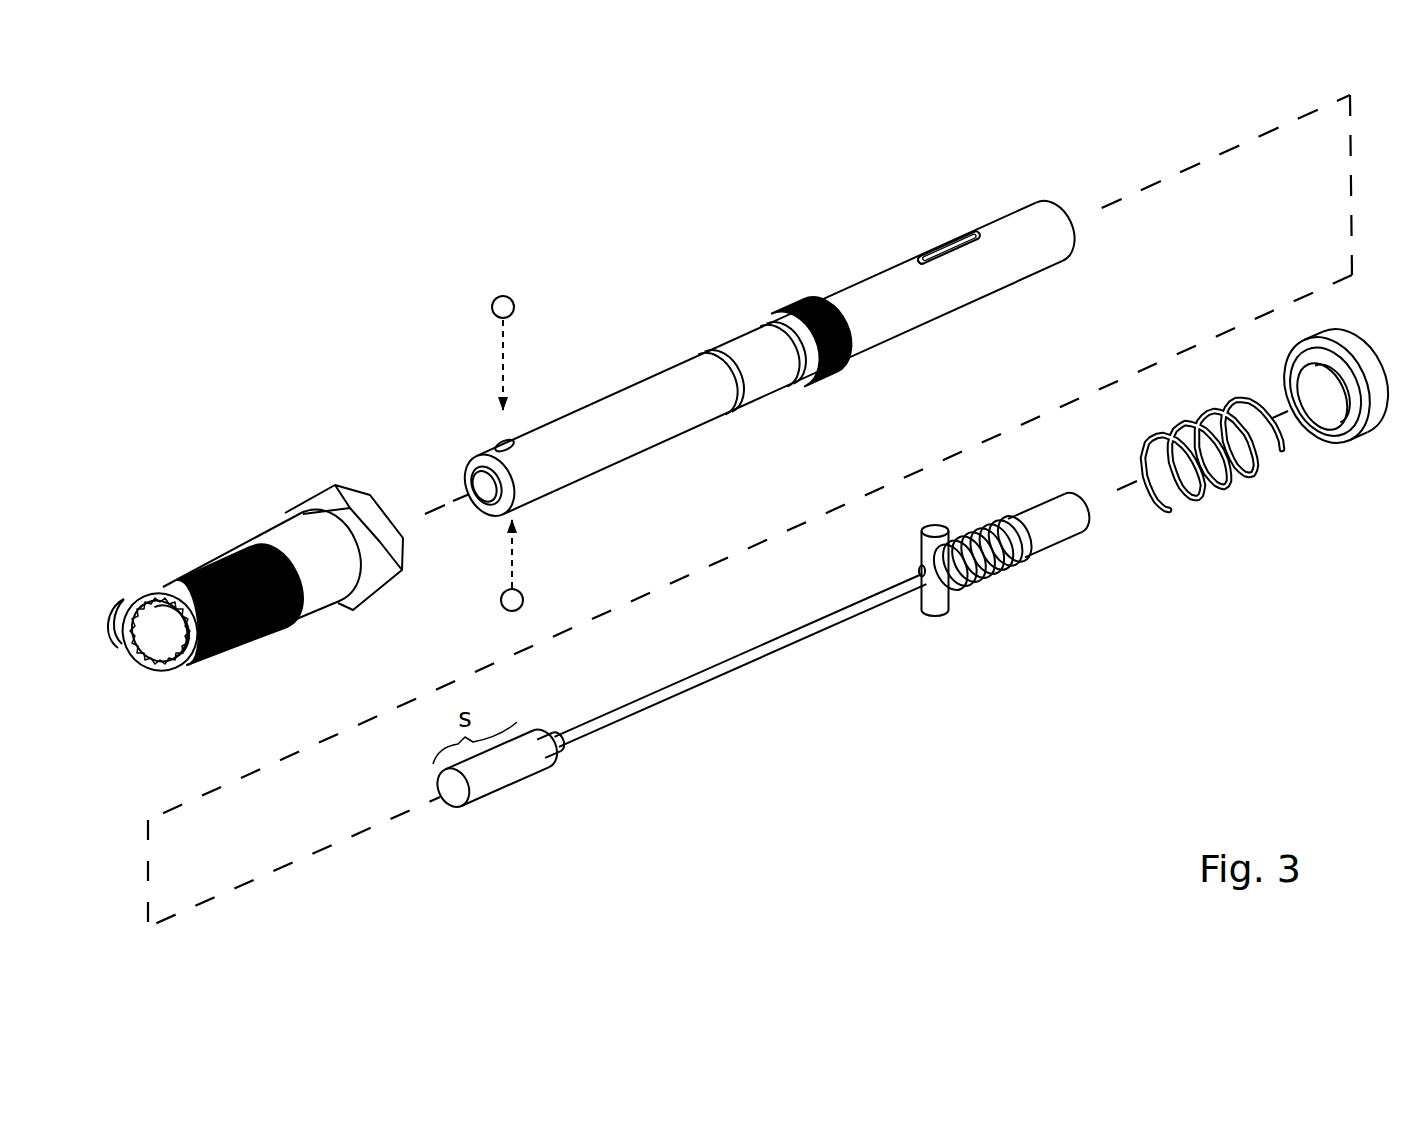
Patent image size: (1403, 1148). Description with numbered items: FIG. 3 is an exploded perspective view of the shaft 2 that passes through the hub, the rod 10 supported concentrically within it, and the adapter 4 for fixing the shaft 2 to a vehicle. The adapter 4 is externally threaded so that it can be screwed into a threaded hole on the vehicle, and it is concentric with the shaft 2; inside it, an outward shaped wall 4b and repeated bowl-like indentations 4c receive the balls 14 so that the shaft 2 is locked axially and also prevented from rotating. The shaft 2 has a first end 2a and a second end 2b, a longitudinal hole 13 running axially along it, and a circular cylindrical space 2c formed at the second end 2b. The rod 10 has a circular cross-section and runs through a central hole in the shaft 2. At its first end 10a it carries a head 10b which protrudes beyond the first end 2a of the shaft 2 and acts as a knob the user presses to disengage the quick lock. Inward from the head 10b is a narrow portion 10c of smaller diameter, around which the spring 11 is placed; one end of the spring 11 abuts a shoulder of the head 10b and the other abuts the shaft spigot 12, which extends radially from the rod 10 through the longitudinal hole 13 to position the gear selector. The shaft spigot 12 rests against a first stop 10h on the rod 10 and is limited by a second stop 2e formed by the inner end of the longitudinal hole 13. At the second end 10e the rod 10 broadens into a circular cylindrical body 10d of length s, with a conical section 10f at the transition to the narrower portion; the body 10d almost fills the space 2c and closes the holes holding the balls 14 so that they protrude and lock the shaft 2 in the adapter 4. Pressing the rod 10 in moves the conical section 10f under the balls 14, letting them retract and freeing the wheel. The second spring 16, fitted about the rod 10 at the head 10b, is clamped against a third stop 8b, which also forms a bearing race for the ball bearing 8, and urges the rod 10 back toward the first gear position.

The shaft 2 is at (636, 380).
The first end of the shaft 2a is at (1070, 207).
The second end of the shaft 2b is at (466, 450).
The circular cylindrical space 2c is at (474, 500).
The second stop 2e is at (926, 255).
The adapter 4 is at (273, 518).
The shaped wall 4b is at (183, 652).
The bowl-like indentations 4c is at (106, 620).
The ball bearing 8 is at (1381, 452).
The third stop 8b is at (1336, 448).
The rod 10 is at (799, 694).
The first end of the rod 10a is at (1090, 512).
The head 10b is at (1045, 534).
The narrow portion 10c is at (853, 627).
The circular cylindrical body 10d is at (520, 776).
The second end of the rod 10e is at (456, 797).
The conical section 10f is at (541, 738).
The first stop 10h is at (916, 567).
The spring 11 is at (1000, 573).
The shaft spigot 12 is at (950, 600).
The longitudinal hole 13 is at (958, 236).
The ball 14 is at (503, 296).
The second spring 16 is at (1252, 470).